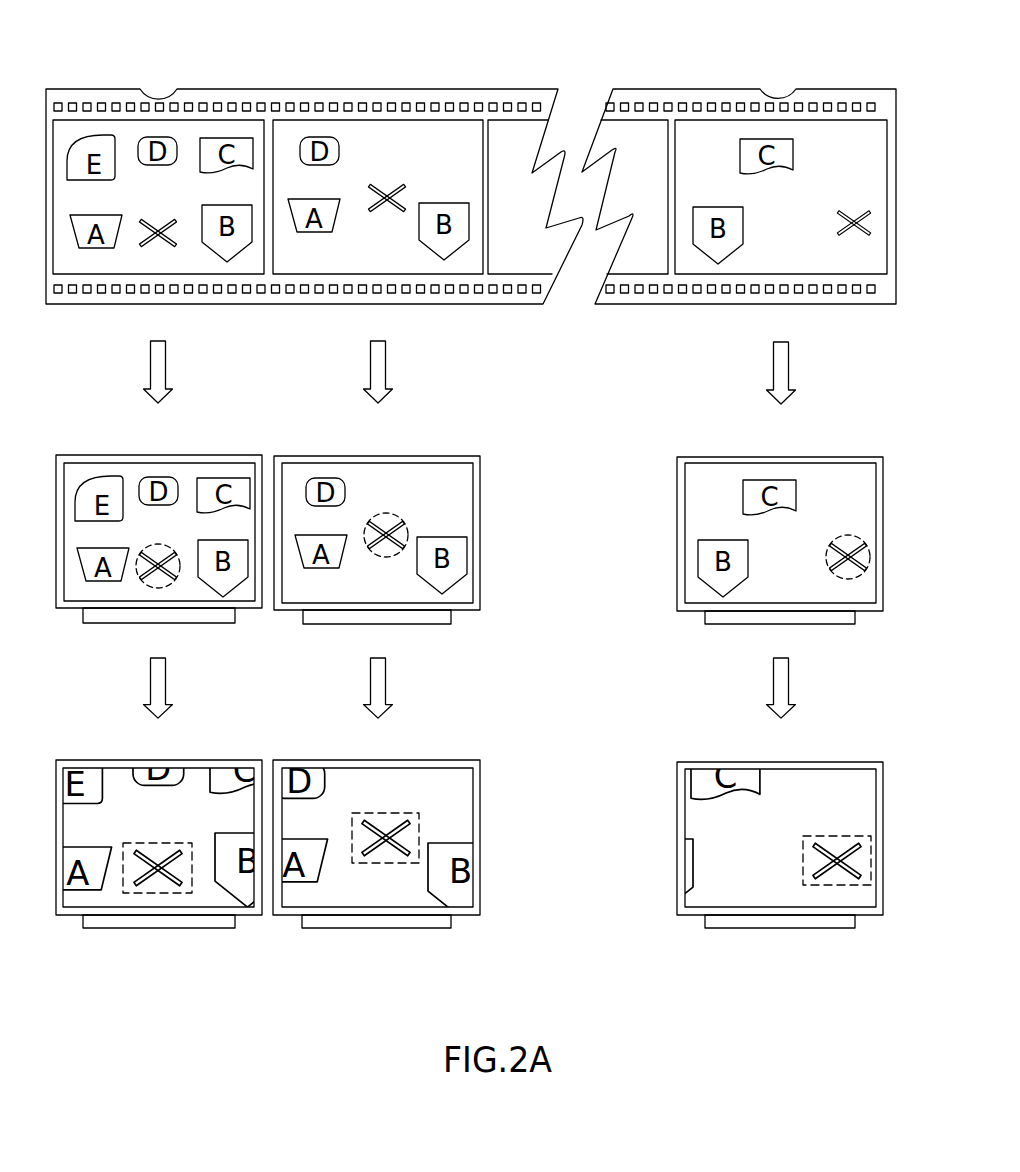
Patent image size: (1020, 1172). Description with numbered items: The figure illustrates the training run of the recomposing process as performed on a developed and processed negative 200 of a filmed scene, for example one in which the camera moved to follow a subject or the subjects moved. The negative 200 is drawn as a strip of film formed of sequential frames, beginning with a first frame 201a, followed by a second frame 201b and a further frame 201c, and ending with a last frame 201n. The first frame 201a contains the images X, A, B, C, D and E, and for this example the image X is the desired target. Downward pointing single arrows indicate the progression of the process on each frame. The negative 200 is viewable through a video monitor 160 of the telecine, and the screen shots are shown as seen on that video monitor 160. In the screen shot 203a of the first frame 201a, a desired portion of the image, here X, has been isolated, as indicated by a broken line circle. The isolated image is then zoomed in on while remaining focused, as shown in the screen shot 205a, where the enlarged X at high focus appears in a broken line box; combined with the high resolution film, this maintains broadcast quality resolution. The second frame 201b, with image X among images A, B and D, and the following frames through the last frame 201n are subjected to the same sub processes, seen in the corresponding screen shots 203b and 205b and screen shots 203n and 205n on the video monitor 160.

The negative 200 is at (98, 86).
The first frame 201a is at (195, 257).
The second frame 201b is at (412, 258).
The frame 201c is at (518, 258).
The last frame 201n is at (817, 258).
The video monitor 160 is at (127, 454).
The screen shot 203a is at (195, 585).
The screen shot 203b is at (412, 587).
The screen shot 203n is at (817, 587).
The screen shot 205a is at (203, 882).
The screen shot 205b is at (403, 883).
The screen shot 205n is at (783, 885).